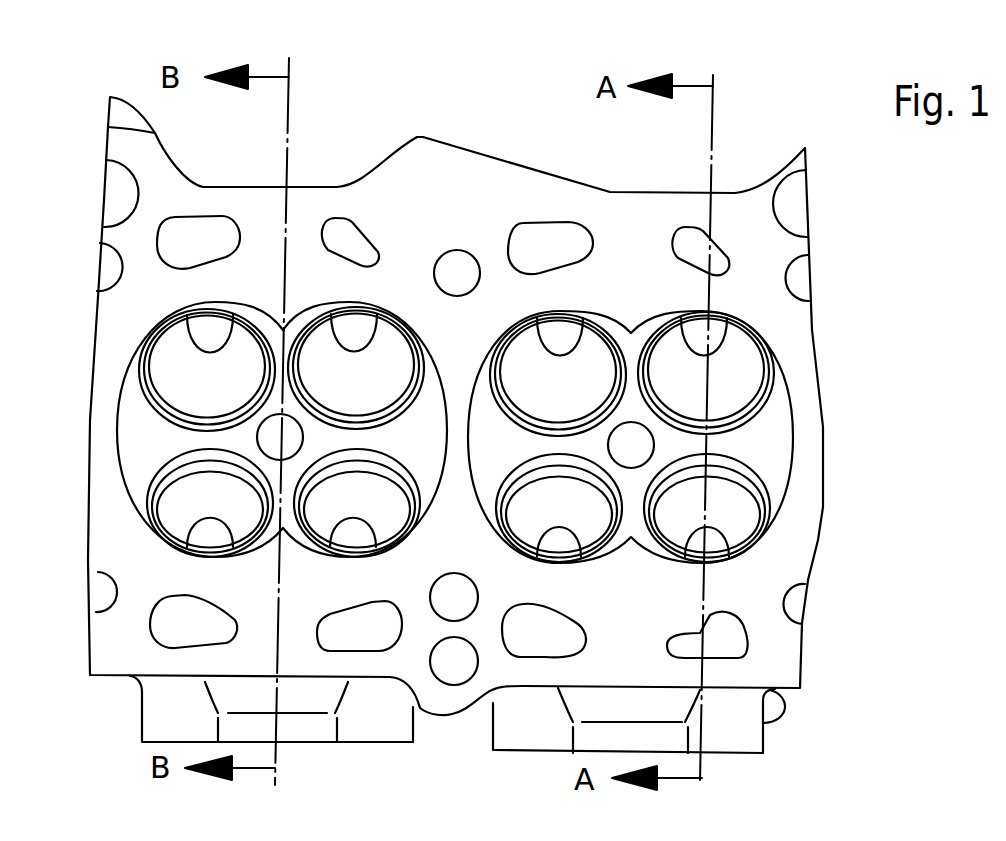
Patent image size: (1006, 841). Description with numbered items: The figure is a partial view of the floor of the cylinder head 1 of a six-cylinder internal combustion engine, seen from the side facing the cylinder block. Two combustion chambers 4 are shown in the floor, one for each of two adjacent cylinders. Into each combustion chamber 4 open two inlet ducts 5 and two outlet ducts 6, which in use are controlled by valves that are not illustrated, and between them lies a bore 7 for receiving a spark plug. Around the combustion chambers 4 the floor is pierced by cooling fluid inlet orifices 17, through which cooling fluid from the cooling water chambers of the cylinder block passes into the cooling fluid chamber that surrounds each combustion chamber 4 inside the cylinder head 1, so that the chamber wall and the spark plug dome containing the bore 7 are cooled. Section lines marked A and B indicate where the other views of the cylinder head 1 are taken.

The cylinder head 1 is at (814, 336).
The combustion chamber 4 is at (773, 465).
The inlet duct 5 is at (537, 372).
The outlet duct 6 is at (522, 522).
The bore for receiving a spark plug 7 is at (293, 442).
The cooling fluid inlet orifice 17 is at (348, 242).